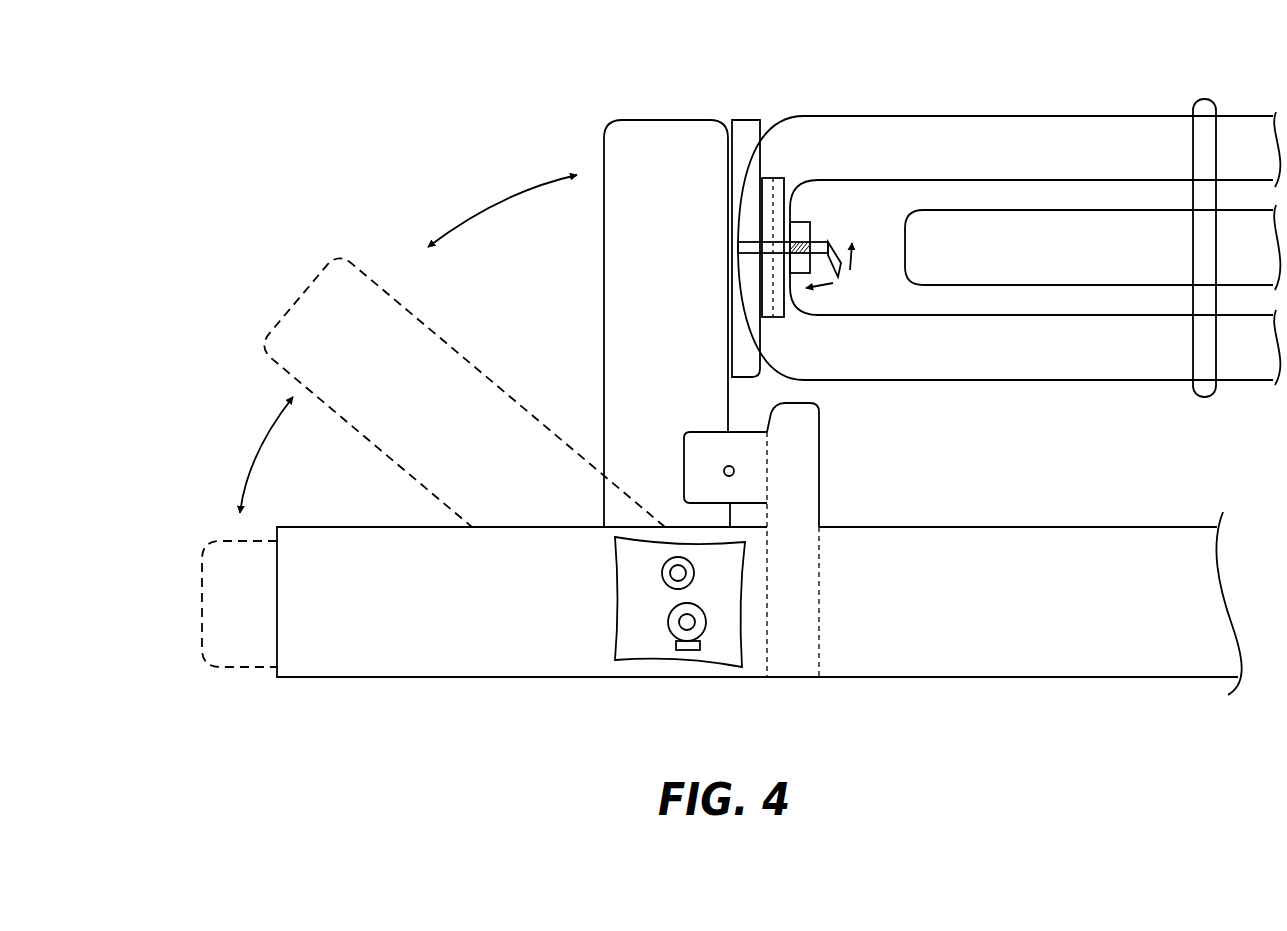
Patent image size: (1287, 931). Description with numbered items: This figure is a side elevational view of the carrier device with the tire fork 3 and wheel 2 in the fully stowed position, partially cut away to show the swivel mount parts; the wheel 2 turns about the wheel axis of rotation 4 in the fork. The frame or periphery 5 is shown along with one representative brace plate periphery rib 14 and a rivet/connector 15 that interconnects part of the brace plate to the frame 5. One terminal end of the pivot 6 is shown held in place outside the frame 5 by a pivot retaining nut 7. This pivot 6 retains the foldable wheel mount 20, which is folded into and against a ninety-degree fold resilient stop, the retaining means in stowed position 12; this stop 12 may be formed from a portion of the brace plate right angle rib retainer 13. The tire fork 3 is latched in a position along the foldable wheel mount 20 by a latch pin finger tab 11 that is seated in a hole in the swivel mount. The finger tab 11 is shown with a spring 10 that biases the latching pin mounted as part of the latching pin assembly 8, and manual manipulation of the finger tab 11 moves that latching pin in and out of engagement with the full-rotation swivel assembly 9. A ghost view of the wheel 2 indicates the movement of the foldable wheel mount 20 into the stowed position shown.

The wheel 2 is at (1072, 208).
The wheel fork 3 is at (1020, 134).
The wheel axis of rotation 4 is at (1206, 106).
The frame/periphery 5 is at (442, 678).
The pivot 6 is at (690, 611).
The pivot retaining nut 7 is at (672, 640).
The latching pin assembly 8 is at (798, 268).
The 360° swivel assembly 9 is at (778, 180).
The spring 10 is at (898, 116).
The latch pin finger tab 11 is at (838, 267).
The retaining means in stowed position 12 is at (706, 443).
The brace plate right angle rib retainer 13 is at (793, 492).
The brace plate periphery rib 14 is at (615, 616).
The brace plate periphery rivet/connector 15 is at (672, 563).
The foldable wheel mount 20 is at (673, 118).